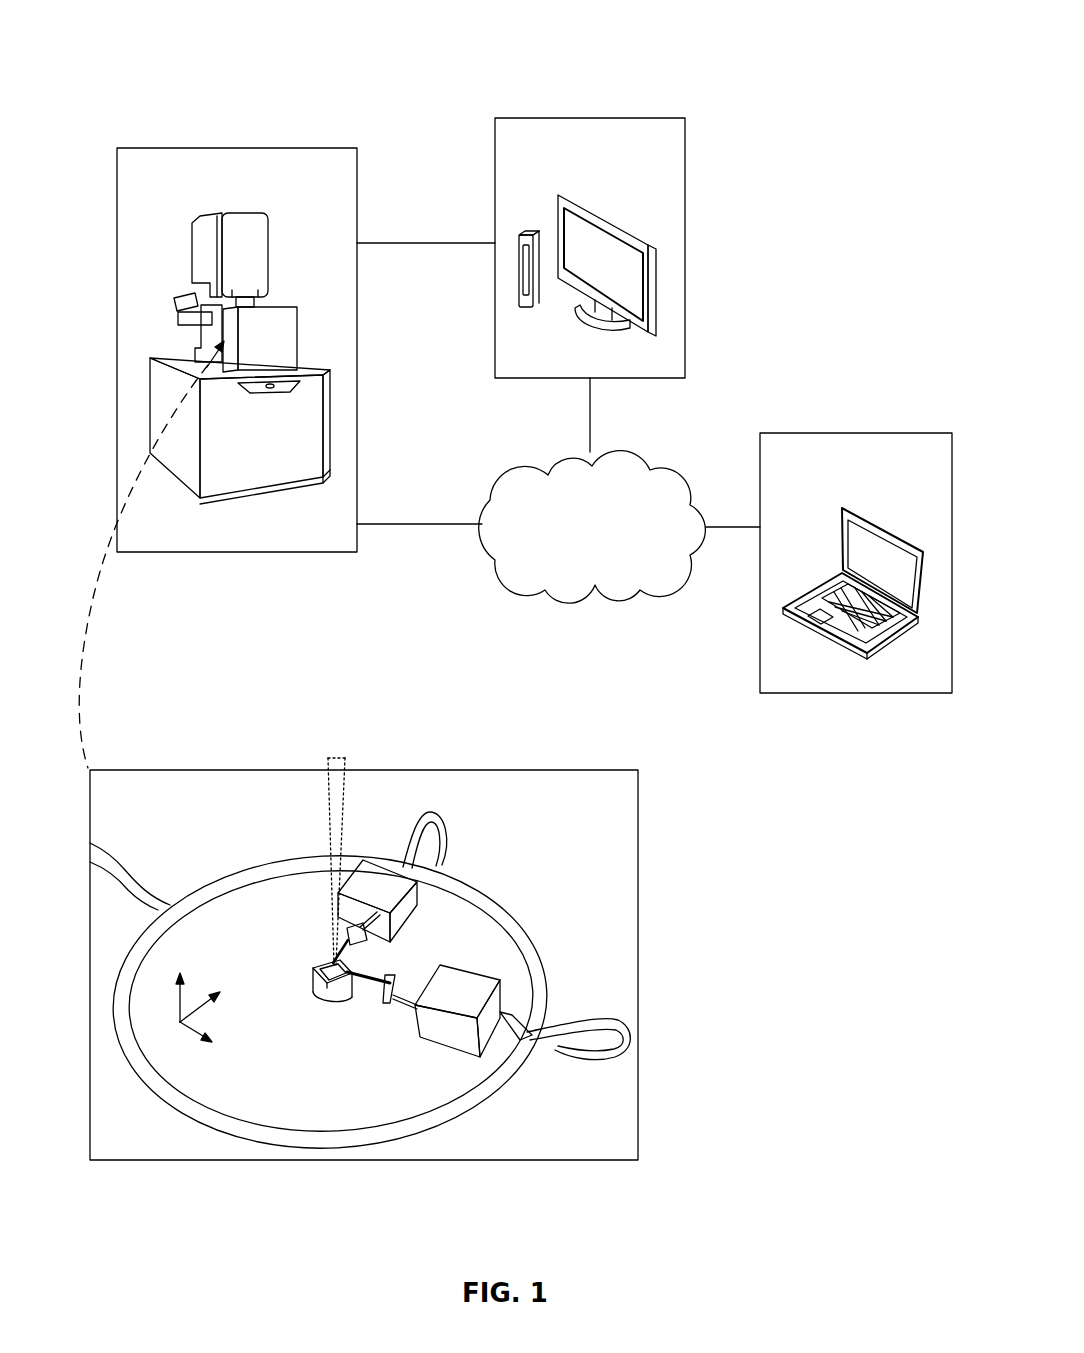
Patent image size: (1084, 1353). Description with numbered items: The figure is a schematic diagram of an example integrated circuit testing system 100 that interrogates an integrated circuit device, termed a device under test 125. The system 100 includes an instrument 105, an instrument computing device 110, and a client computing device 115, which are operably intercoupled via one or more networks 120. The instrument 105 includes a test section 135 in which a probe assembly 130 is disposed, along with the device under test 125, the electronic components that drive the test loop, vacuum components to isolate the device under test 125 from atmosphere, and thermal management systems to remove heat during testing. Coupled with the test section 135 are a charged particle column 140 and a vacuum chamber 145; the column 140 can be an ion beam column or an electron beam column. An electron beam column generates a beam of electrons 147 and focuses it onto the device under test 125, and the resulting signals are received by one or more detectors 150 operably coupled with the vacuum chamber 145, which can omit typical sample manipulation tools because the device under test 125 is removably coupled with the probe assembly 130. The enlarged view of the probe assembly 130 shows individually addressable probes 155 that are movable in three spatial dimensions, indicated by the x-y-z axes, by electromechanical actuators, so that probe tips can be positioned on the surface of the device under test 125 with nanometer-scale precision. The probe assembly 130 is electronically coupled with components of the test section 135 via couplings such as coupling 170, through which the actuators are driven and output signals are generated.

The integrated circuit testing system 100 is at (882, 52).
The instrument 105 is at (219, 538).
The instrument computing device 110 is at (572, 373).
The client computing device 115 is at (837, 688).
The networks 120 is at (572, 555).
The device under test 125 is at (340, 990).
The probe assembly 130 is at (457, 1087).
The test section 135 is at (162, 374).
The charged particle column 140 is at (193, 243).
The vacuum chamber 145 is at (280, 332).
The beam of electrons 147 is at (328, 758).
The detectors 150 is at (178, 300).
The probes 155 is at (355, 975).
The coupling 170 is at (113, 857).